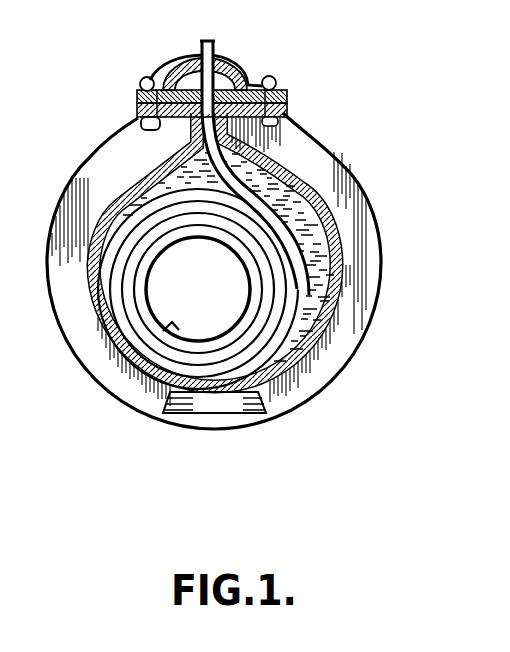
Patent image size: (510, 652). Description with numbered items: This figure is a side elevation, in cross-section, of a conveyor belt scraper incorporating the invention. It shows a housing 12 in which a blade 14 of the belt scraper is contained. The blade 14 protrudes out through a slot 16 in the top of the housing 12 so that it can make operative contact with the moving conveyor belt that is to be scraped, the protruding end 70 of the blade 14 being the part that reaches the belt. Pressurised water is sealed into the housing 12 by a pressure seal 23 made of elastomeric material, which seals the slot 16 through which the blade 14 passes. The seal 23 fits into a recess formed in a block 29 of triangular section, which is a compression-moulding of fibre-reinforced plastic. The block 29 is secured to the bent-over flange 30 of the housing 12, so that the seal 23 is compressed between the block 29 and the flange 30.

The housing 12 is at (333, 200).
The blade 14 is at (288, 269).
The slot 16 is at (313, 137).
The pressure seal 23 is at (278, 88).
The block 29 is at (183, 67).
The bent-over flange 30 is at (141, 128).
The protruding end 70 is at (214, 52).